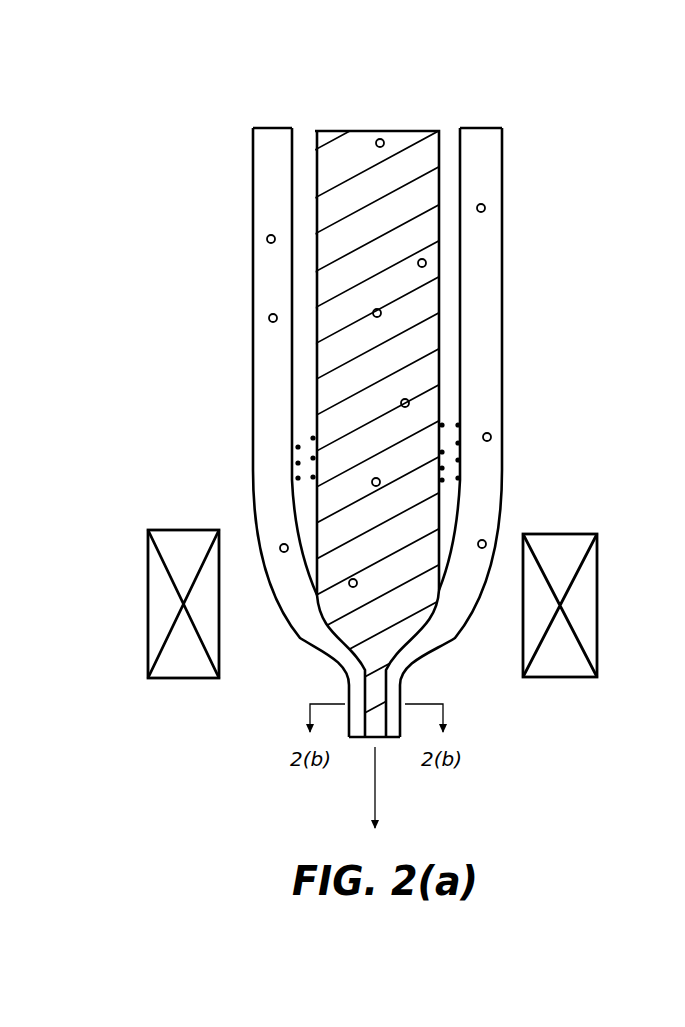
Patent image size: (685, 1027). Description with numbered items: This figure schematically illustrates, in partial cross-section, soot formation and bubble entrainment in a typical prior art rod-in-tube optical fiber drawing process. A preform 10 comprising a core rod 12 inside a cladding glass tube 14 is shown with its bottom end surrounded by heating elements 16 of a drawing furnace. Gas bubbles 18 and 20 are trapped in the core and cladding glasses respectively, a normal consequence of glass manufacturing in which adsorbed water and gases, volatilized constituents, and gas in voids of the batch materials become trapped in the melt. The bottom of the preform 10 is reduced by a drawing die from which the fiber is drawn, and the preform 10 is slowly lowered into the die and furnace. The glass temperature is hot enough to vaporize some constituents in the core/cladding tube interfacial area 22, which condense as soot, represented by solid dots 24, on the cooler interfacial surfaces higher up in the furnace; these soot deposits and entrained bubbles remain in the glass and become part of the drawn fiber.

The preform 10 is at (360, 62).
The core rod 12 is at (412, 130).
The cladding glass tube 14 is at (502, 267).
The heating elements 16 is at (148, 617).
The gas bubbles 18 is at (380, 138).
The gas bubbles 20 is at (485, 211).
The core/cladding tube interfacial area 22 is at (303, 138).
The soot 24 is at (300, 463).